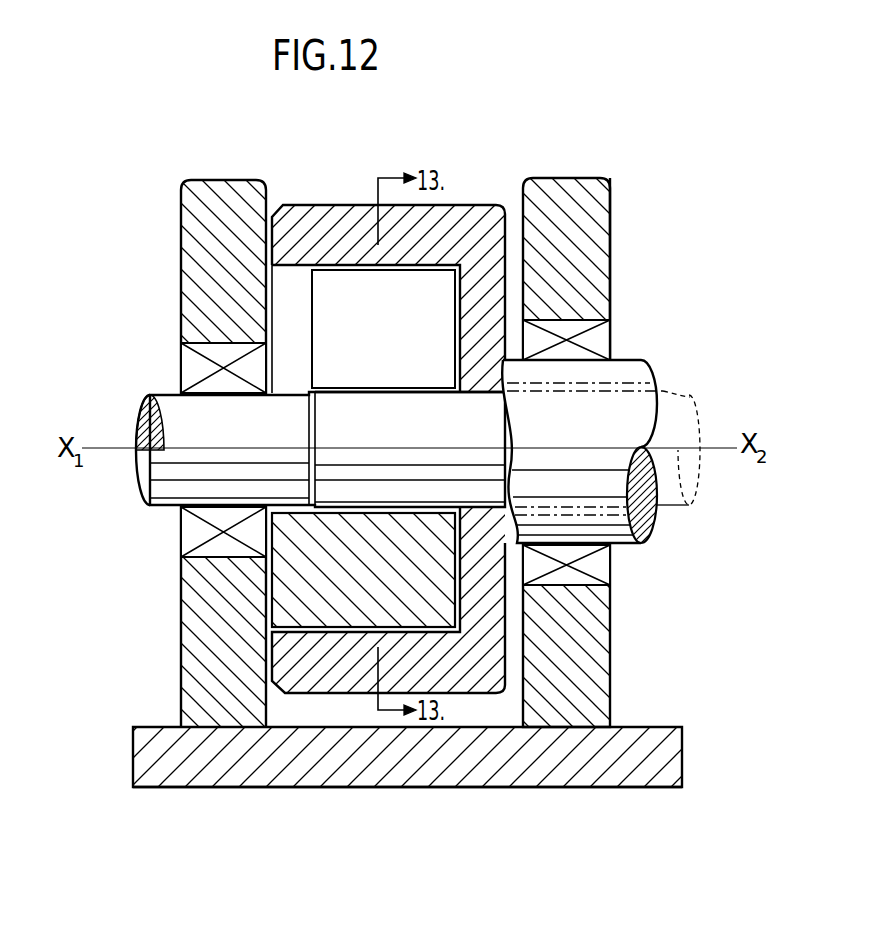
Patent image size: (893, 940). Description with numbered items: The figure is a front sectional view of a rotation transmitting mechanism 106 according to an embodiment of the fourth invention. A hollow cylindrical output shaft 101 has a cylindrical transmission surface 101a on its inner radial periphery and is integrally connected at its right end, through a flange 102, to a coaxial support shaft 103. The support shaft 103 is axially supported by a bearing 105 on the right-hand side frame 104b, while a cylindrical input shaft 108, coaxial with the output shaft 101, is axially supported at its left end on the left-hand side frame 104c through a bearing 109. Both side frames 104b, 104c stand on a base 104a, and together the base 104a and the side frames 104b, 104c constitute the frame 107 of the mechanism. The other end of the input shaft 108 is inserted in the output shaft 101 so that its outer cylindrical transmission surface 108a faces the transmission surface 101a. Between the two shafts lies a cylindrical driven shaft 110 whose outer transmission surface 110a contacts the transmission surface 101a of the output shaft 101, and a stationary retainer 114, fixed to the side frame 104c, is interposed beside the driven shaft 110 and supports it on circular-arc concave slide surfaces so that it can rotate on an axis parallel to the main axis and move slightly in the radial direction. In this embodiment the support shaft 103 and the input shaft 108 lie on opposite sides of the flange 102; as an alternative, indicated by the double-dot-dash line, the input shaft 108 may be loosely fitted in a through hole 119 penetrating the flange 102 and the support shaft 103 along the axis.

The output shaft 101 is at (452, 213).
The transmission surface 101a is at (287, 266).
The flange 102 is at (497, 290).
The support shaft 103 is at (612, 368).
The base 104a is at (413, 787).
The side frame 104b is at (566, 178).
The side frame 104c is at (226, 419).
The bearing 105 is at (607, 567).
The rotation transmitting mechanism 106 is at (622, 183).
The frame 107 is at (626, 790).
The input shaft 108 is at (173, 405).
The transmission surface 108a is at (413, 388).
The bearing 109 is at (183, 528).
The driven shaft 110 is at (380, 308).
The transmission surface 110a is at (393, 392).
The stationary retainer 114 is at (353, 585).
The through hole 119 is at (643, 373).